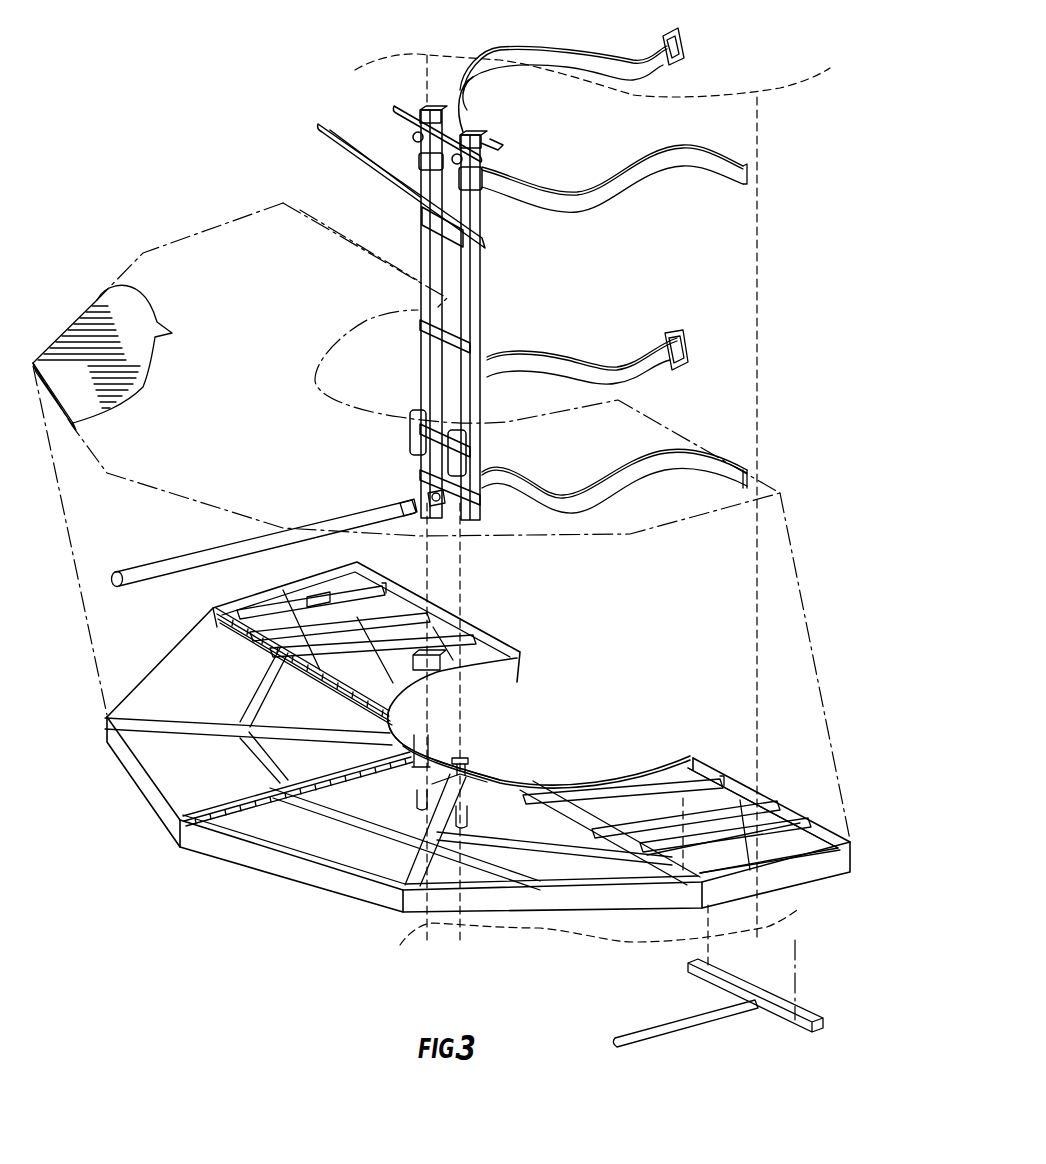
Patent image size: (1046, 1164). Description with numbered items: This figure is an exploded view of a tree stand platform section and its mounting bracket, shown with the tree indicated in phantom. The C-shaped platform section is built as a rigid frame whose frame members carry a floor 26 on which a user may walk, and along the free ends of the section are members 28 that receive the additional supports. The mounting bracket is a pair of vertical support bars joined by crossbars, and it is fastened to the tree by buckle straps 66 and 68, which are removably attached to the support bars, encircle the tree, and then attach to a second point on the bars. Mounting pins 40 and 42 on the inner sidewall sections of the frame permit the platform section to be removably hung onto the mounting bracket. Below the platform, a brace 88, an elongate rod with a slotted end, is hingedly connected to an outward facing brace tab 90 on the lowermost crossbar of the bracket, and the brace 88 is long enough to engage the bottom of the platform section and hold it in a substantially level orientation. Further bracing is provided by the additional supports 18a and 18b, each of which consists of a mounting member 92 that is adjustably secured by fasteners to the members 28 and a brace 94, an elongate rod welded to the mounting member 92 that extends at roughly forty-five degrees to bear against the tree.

The floor 26 is at (107, 322).
The buckle strap 66 is at (605, 183).
The buckle strap 68 is at (630, 373).
The brace tab 90 is at (433, 500).
The additional support 18a is at (310, 600).
The brace 88 is at (158, 555).
The mounting member 92 is at (355, 614).
The brace 94 is at (387, 680).
The member 28 is at (467, 632).
The mounting pin 42 is at (437, 740).
The mounting pin 40 is at (470, 760).
The additional support 18b is at (630, 1058).